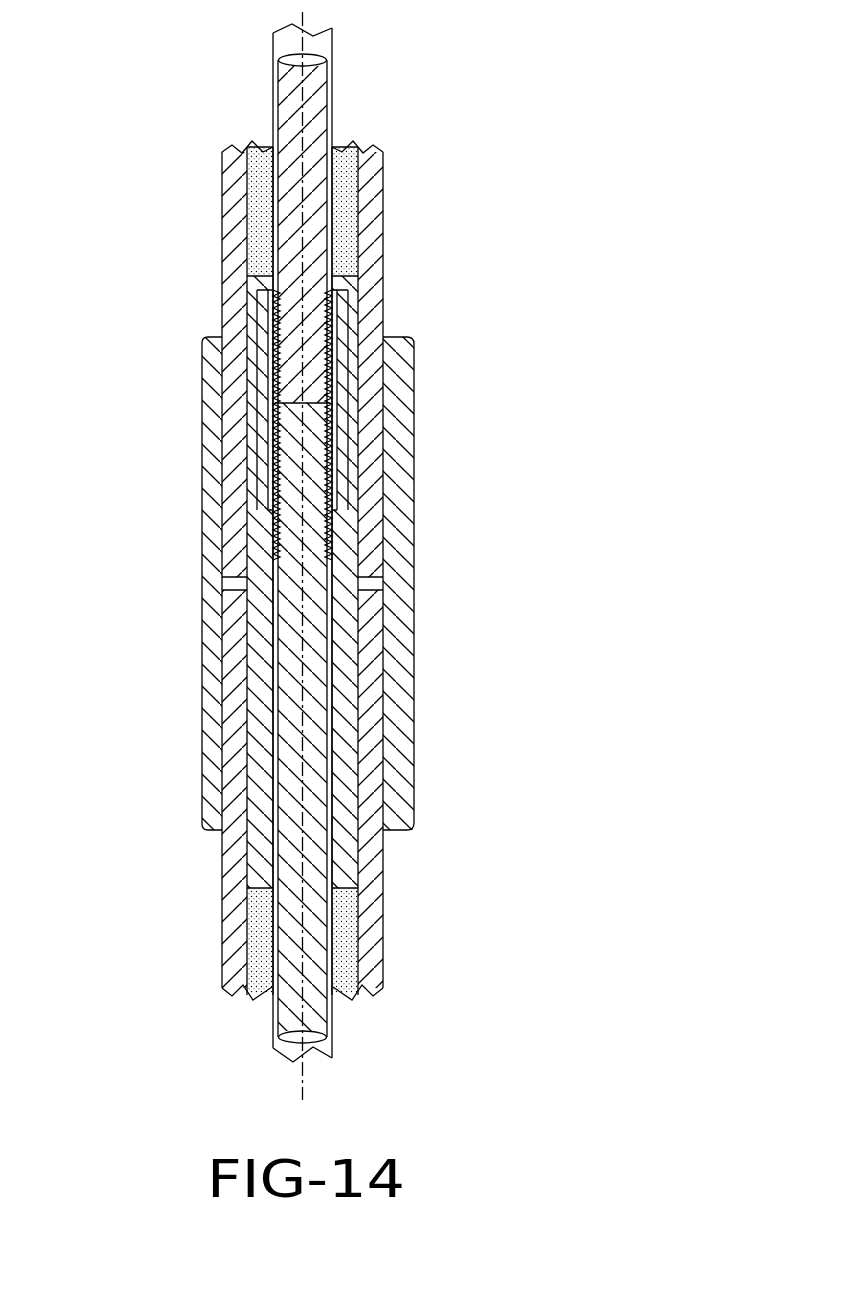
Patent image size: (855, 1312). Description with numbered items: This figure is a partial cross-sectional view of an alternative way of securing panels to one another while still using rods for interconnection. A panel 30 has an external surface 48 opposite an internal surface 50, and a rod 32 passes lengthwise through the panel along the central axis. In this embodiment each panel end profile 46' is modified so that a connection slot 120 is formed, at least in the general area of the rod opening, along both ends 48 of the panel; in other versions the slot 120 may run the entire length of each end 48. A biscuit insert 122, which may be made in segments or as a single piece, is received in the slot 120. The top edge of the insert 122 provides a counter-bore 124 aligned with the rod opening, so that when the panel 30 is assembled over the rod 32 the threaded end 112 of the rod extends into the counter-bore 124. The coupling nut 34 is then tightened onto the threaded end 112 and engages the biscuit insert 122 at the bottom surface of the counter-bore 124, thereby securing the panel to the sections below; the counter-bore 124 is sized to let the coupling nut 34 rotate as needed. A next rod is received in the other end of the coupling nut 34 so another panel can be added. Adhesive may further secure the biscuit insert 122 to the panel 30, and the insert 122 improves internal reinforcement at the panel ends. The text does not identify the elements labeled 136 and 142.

The panel 30 is at (292, 556).
The rod 32 is at (314, 90).
The coupling nut 34 is at (333, 418).
The panel end profile 46' is at (369, 605).
The external surface 48 is at (236, 178).
The internal surface 50 is at (386, 177).
The threaded end 112 is at (313, 376).
The connection slot 120 is at (338, 890).
The biscuit insert 122 is at (345, 750).
The counter-bore 124 is at (344, 312).
The housing 136 is at (210, 611).
The housing portion 142 is at (397, 572).